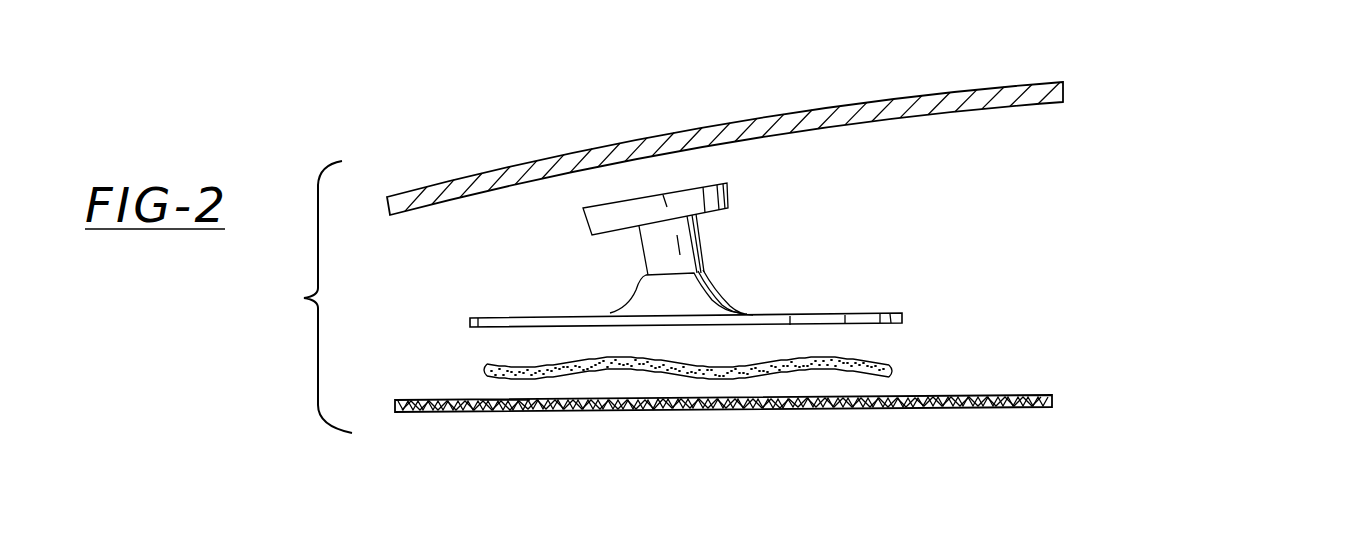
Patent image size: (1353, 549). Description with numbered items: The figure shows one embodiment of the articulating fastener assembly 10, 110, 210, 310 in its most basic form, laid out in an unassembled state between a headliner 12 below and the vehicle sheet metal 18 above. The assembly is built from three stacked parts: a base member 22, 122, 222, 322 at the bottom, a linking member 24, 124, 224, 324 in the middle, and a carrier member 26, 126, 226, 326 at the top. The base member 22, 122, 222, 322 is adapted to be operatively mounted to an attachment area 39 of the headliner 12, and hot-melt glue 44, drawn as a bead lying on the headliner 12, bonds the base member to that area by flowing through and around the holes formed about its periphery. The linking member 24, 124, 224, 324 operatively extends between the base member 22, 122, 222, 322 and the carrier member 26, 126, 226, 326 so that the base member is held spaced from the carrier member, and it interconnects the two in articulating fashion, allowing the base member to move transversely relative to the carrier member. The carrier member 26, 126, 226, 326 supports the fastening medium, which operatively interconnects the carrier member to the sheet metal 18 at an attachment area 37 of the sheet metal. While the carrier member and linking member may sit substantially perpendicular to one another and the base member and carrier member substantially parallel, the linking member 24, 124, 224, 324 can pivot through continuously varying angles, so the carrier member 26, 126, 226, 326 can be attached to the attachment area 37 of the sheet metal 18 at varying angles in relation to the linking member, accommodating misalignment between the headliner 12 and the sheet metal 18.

The sheet metal 18 is at (1064, 90).
The attachment area of the sheet metal 37 is at (726, 143).
The carrier member 26 is at (818, 186).
The carrier member 126 is at (655, 209).
The carrier member 226 is at (655, 209).
The carrier member 326 is at (748, 192).
The fastener assembly 10 is at (842, 238).
The fastener assembly 110 is at (671, 244).
The fastener assembly 210 is at (671, 244).
The fastener assembly 310 is at (671, 244).
The linking member 24 is at (830, 284).
The linking member 124 is at (681, 292).
The linking member 224 is at (681, 292).
The linking member 324 is at (725, 257).
The base member 22 is at (886, 315).
The base member 122 is at (686, 320).
The base member 222 is at (686, 320).
The base member 322 is at (917, 315).
The hot-melt glue 44 is at (889, 368).
The headliner 12 is at (1055, 398).
The attachment area of the headliner 39 is at (497, 394).